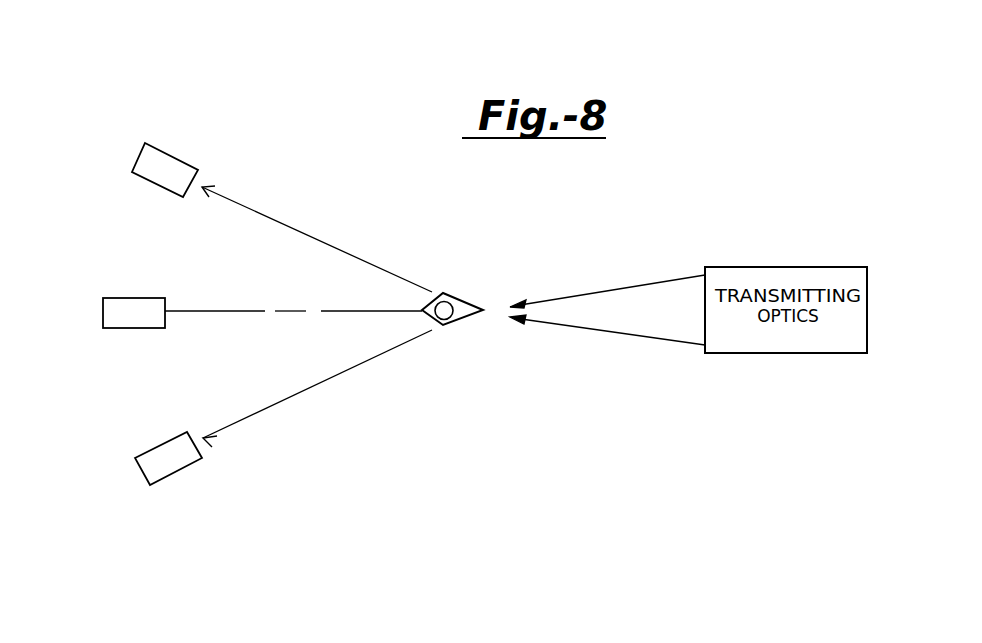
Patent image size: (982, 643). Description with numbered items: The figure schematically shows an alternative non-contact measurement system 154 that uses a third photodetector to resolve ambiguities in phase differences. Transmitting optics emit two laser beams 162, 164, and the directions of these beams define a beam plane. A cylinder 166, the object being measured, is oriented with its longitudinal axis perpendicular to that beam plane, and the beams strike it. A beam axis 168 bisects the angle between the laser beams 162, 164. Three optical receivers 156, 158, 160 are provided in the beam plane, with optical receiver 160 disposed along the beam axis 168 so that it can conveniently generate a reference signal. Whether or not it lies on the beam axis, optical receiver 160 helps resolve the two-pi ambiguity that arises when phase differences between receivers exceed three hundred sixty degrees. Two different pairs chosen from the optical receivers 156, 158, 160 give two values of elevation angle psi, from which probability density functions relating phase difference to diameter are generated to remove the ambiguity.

The alternative system 154 is at (319, 168).
The optical receiver 156 is at (158, 145).
The optical receiver 158 is at (180, 472).
The optical receiver 160 is at (128, 298).
The laser beam 162 is at (573, 293).
The laser beam 164 is at (615, 333).
The cylinder 166 is at (457, 316).
The beam axis 168 is at (250, 311).